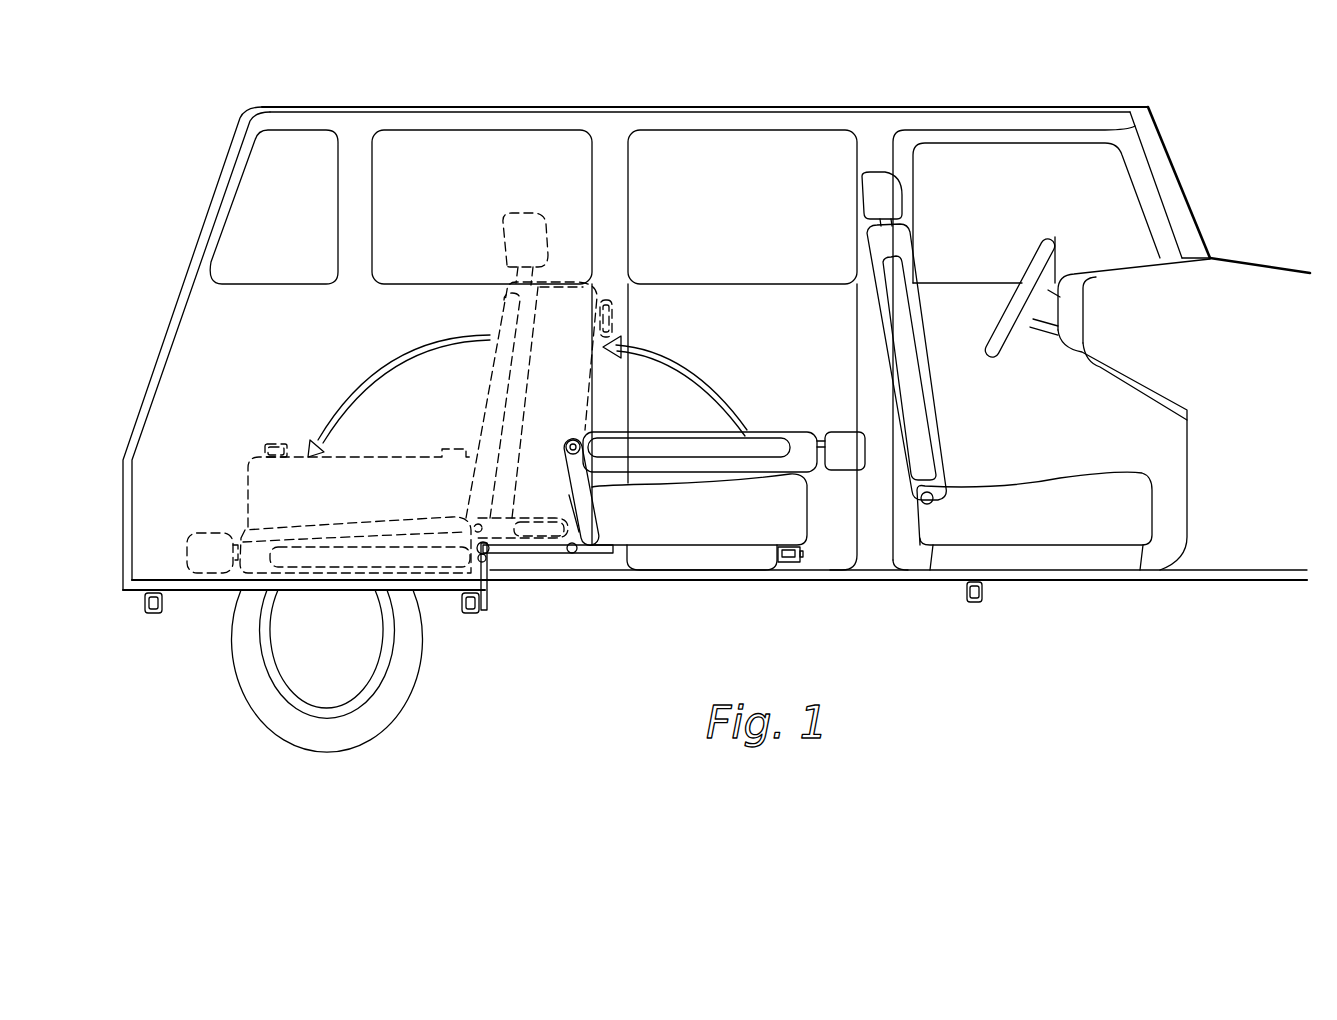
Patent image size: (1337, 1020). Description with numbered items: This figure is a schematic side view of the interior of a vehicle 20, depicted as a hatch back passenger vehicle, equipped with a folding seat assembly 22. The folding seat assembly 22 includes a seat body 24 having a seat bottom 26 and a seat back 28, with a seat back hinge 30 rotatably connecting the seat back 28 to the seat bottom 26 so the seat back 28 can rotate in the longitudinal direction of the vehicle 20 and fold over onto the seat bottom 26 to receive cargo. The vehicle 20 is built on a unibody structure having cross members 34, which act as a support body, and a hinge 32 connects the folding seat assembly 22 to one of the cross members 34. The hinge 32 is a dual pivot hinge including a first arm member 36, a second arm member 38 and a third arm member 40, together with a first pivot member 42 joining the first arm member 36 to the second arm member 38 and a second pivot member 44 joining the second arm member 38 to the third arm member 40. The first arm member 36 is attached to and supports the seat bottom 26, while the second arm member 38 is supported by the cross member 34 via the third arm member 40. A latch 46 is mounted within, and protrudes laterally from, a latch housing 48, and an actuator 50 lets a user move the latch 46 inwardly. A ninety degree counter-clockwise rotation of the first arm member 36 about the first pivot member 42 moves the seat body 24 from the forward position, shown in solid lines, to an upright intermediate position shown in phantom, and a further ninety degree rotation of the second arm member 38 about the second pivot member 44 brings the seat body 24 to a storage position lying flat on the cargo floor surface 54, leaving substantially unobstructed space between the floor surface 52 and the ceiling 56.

The vehicle 20 is at (208, 157).
The folding seat assembly 22 is at (677, 268).
The seat body 24 is at (526, 393).
The seat bottom 26 is at (797, 507).
The seat back 28 is at (800, 433).
The seat back hinge 30 is at (570, 440).
The hinge 32 is at (660, 595).
The cross members 34 is at (152, 615).
The first arm member 36 is at (605, 547).
The second arm member 38 is at (527, 552).
The third arm member 40 is at (488, 600).
The first pivot member 42 is at (572, 555).
The second pivot member 44 is at (490, 557).
The latch 46 is at (788, 562).
The latch housing 48 is at (770, 565).
The actuator 50 is at (805, 553).
The floor surface 52 is at (860, 548).
The cargo floor surface 54 is at (160, 577).
The ceiling 56 is at (472, 110).